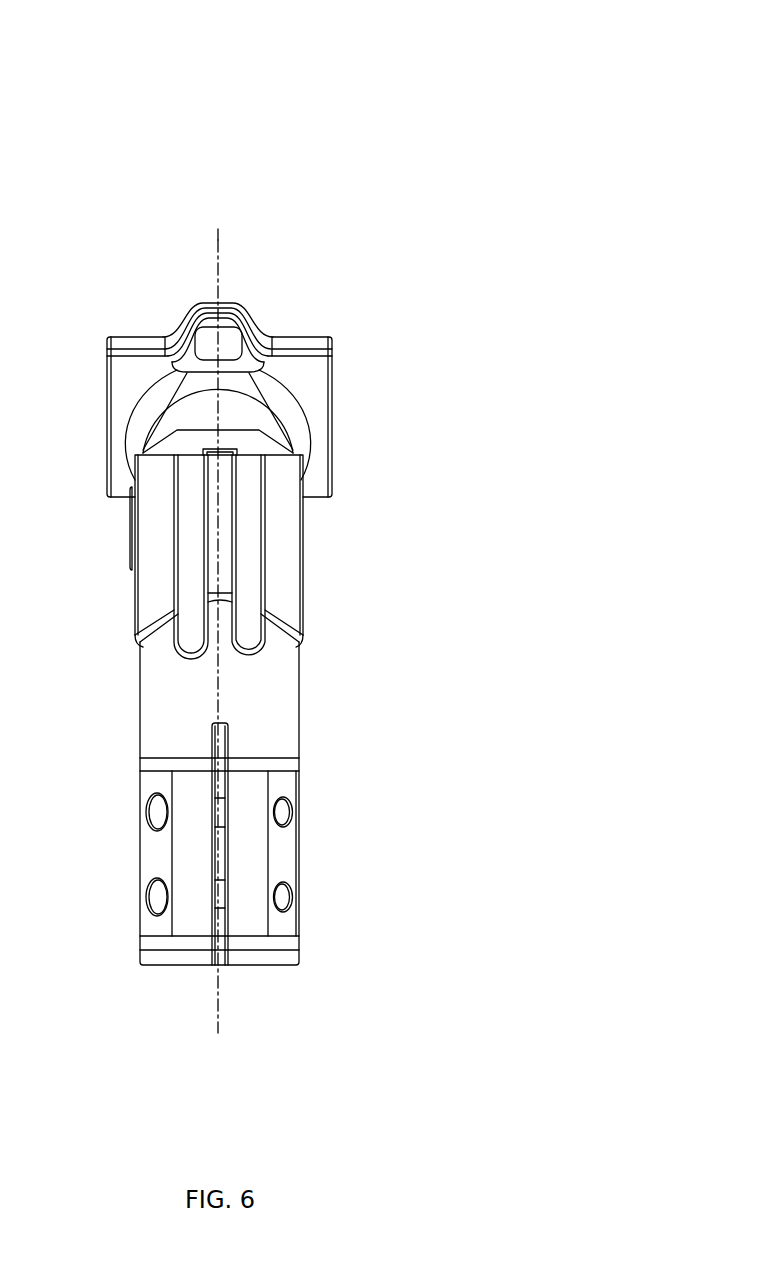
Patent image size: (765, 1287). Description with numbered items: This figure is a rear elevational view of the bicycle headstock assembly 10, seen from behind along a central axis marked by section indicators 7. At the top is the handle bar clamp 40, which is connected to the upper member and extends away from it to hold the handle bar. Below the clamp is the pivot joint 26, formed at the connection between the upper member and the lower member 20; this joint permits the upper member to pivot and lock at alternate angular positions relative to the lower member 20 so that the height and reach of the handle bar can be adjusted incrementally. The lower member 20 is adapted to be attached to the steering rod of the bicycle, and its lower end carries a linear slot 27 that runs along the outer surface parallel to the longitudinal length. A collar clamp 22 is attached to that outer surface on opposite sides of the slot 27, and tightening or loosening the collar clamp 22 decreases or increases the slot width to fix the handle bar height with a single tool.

The bicycle headstock assembly 10 is at (288, 108).
The section line for FIG. 7 is at (218, 229).
The handle bar clamp 40 is at (341, 381).
The pivot joint 26 is at (320, 553).
The lower member 20 is at (320, 735).
The collar clamp 22 is at (148, 858).
The linear slot 27 is at (218, 898).